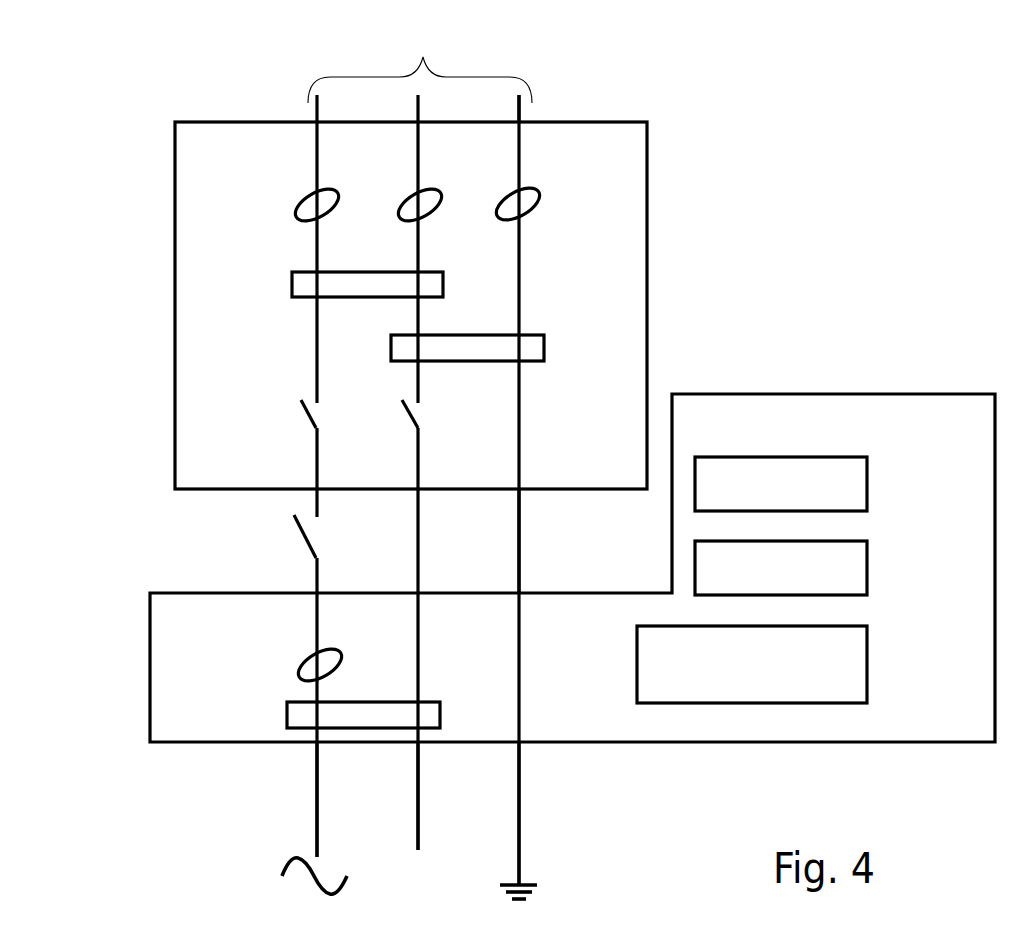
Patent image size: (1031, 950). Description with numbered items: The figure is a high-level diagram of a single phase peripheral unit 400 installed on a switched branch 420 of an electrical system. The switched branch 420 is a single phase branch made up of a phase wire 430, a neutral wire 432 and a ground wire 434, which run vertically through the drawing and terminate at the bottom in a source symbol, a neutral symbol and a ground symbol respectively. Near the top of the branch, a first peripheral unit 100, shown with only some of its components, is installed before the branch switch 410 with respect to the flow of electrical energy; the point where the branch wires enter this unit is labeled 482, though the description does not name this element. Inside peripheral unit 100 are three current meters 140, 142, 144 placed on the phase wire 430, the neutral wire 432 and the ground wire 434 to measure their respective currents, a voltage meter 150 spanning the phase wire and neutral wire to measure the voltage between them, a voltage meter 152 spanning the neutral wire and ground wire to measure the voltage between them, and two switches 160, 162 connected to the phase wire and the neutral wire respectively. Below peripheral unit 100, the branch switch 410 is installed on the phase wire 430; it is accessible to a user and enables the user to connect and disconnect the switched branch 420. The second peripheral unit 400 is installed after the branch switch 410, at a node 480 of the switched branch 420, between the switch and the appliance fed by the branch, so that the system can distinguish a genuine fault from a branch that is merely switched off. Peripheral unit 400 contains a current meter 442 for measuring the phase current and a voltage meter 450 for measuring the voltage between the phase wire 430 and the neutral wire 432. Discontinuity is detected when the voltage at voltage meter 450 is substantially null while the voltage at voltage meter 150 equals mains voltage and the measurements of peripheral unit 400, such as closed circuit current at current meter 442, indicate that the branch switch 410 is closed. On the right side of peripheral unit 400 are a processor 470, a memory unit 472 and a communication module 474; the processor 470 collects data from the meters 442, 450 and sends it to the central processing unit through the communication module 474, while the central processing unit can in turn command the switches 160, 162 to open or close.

The peripheral unit 100 is at (650, 220).
The current meter 140 is at (297, 202).
The current meter 142 is at (407, 197).
The current meter 144 is at (543, 193).
The voltage meter 150 is at (291, 285).
The voltage meter 152 is at (547, 343).
The switch 160 is at (306, 418).
The switch 162 is at (405, 418).
The peripheral unit 400 is at (850, 393).
The branch switch 410 is at (300, 545).
The switched branch 420 is at (420, 65).
The phase wire 430 is at (313, 802).
The neutral wire 432 is at (420, 802).
The ground wire 434 is at (521, 802).
The current meter 442 is at (298, 662).
The voltage meter 450 is at (292, 701).
The processor 470 is at (868, 565).
The memory unit 472 is at (868, 482).
The communication module 474 is at (868, 663).
The node 480 is at (523, 587).
The ground line 482 is at (523, 120).